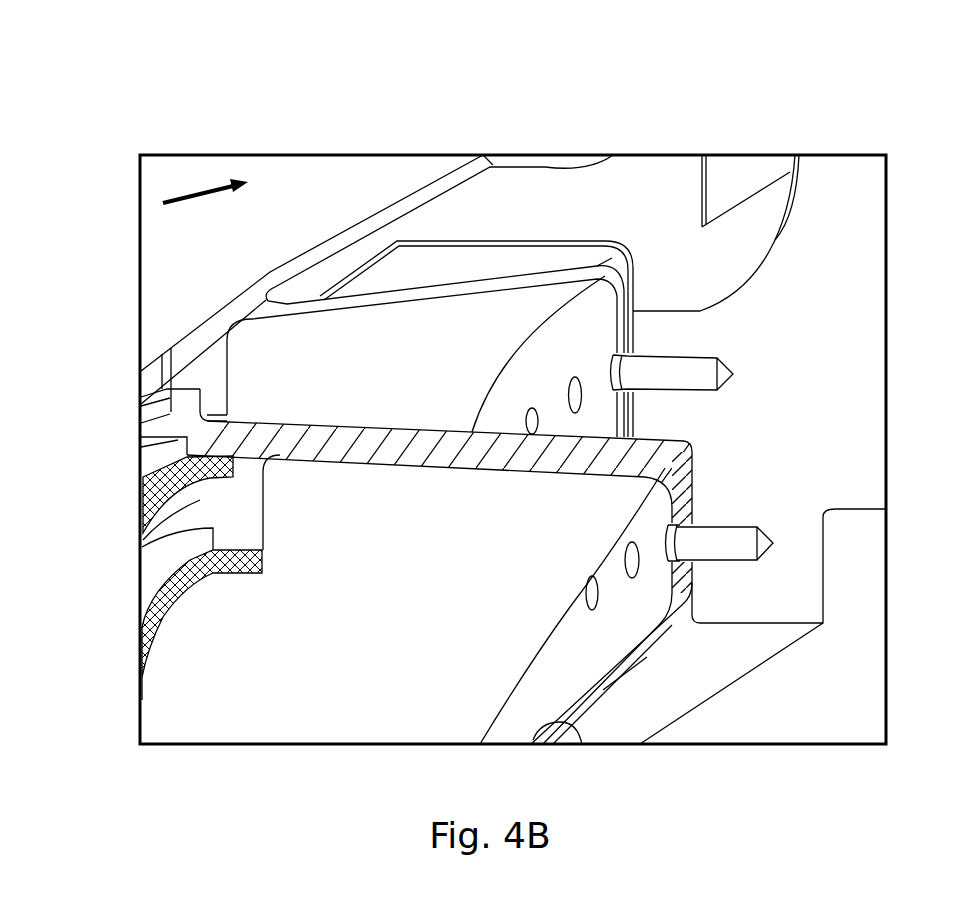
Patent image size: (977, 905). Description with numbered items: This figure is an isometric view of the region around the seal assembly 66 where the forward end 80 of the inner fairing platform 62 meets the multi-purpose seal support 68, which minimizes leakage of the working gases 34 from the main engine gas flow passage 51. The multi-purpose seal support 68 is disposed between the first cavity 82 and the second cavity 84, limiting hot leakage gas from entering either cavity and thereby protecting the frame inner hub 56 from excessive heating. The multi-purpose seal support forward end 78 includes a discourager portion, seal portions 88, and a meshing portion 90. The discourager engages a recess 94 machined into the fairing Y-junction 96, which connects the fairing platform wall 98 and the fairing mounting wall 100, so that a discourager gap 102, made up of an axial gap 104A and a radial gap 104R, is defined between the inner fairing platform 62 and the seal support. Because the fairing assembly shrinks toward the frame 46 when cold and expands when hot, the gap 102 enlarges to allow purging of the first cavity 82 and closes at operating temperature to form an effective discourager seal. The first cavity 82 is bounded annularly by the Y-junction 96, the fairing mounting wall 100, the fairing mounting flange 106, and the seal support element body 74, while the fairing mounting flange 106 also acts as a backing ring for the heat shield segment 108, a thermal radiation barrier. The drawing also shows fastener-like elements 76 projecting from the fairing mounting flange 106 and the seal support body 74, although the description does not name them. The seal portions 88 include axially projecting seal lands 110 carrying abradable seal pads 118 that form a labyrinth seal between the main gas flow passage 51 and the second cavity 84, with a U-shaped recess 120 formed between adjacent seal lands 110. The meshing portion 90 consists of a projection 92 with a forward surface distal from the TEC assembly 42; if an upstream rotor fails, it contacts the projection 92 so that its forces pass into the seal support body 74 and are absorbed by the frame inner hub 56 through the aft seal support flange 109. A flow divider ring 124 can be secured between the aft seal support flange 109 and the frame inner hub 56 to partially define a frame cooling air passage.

The working gases 34 is at (197, 181).
The TEC assembly 42 is at (887, 126).
The frame 46 is at (901, 208).
The main engine gas flow passage 51 is at (247, 231).
The frame inner hub 56 is at (802, 311).
The inner fairing platform 62 is at (346, 215).
The seal assembly 66 is at (127, 388).
The multi-purpose seal support 68 is at (416, 420).
The seal support element body 74 is at (503, 448).
The fasteners 76 is at (662, 424).
The multi-purpose seal support forward end 78 is at (122, 580).
The forward end of inner fairing platform 80 is at (208, 307).
The first cavity 82 is at (442, 355).
The second cavity 84 is at (417, 666).
The seal portions 88 is at (272, 451).
The meshing portion 90 is at (130, 439).
The projection 92 is at (157, 453).
The recess 94 is at (196, 387).
The fairing Y-junction 96 is at (194, 371).
The fairing platform wall 98 is at (466, 176).
The fairing mounting wall 100 is at (470, 290).
The discourager gap 102 is at (127, 406).
The axial gap 104A is at (207, 410).
The radial gap 104R is at (172, 340).
The fairing mounting flange 106 is at (566, 351).
The heat shield segment 108 is at (593, 245).
The aft seal support flange 109 is at (536, 656).
The seal land 110 is at (150, 463).
The abradable seal pads 118 is at (150, 506).
The U-shaped recess 120 is at (199, 528).
The flow divider ring 124 is at (580, 727).